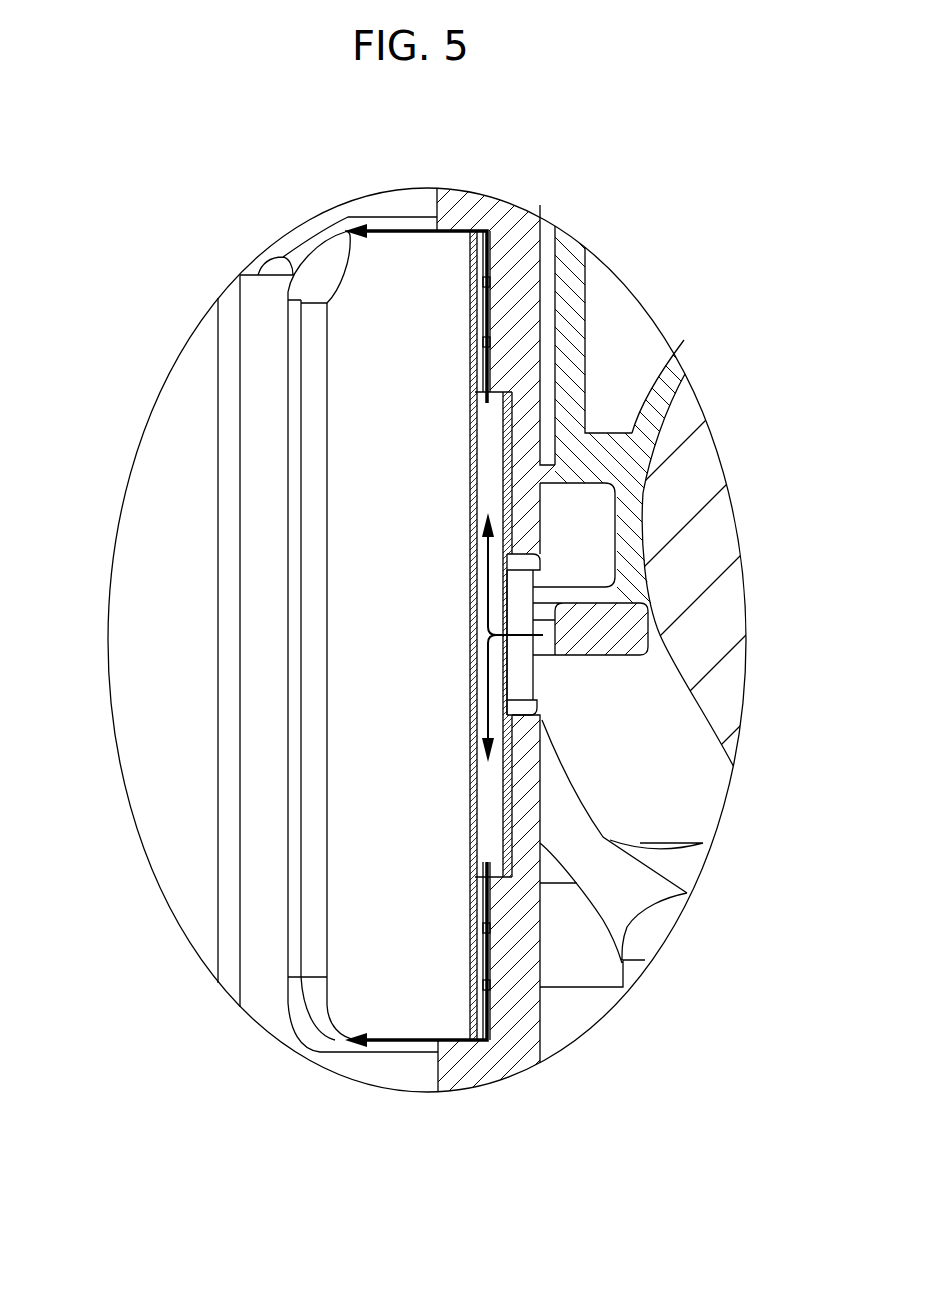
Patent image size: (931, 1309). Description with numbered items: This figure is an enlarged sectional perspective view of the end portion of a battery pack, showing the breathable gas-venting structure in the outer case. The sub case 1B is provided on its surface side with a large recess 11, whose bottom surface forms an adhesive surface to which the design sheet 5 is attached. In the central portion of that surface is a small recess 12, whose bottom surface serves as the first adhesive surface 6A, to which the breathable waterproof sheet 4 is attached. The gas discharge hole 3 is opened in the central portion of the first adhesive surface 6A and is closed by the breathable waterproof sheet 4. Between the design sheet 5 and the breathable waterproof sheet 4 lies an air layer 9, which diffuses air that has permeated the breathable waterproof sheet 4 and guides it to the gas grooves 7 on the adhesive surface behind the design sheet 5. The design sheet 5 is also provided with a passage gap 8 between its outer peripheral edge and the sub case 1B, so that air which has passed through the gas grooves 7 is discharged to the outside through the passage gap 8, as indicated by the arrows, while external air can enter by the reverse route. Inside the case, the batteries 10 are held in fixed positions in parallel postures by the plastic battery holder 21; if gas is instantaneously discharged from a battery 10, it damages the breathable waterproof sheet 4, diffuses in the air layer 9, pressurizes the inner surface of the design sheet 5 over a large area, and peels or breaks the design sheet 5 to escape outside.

The sub case 1B is at (257, 855).
The gas discharge hole 3 is at (534, 726).
The breathable waterproof sheet 4 is at (475, 787).
The design sheet 5 is at (373, 668).
The first adhesive surface 6A is at (498, 817).
The gas groove 7 is at (503, 328).
The passage gap 8 is at (481, 206).
The air layer 9 is at (506, 440).
The battery 10 is at (704, 573).
The large recess 11 is at (307, 1032).
The small recess 12 is at (507, 891).
The battery holder 21 is at (605, 650).